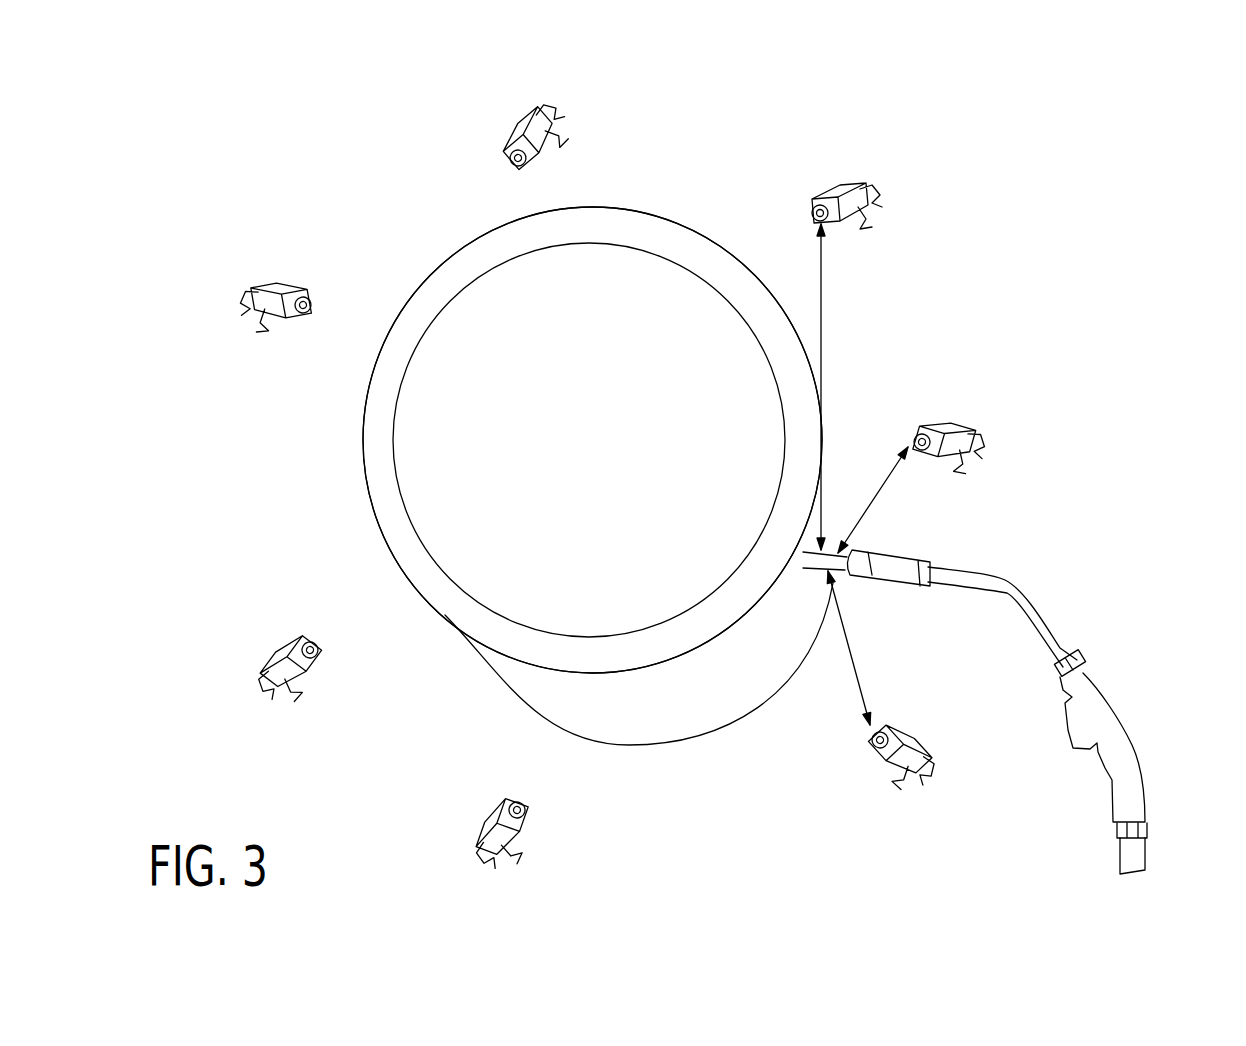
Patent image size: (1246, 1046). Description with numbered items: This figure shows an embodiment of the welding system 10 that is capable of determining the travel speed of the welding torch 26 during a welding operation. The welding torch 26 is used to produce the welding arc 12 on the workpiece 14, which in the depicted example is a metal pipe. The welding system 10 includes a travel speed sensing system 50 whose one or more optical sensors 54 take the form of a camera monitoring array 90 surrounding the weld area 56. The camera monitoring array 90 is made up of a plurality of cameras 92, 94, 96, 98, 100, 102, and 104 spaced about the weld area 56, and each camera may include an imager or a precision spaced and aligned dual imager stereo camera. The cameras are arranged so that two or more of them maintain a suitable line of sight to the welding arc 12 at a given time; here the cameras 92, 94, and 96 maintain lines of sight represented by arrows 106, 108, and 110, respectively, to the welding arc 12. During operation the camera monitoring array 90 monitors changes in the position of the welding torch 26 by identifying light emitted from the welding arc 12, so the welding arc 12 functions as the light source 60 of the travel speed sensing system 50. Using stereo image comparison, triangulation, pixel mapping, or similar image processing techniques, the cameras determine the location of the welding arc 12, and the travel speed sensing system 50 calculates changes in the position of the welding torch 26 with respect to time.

The welding system 10 is at (320, 94).
The welding arc 12 is at (805, 557).
The workpiece 14 is at (708, 715).
The welding torch 26 is at (1140, 753).
The travel speed sensing system 50 is at (747, 116).
The optical sensors 54 is at (188, 247).
The weld area 56 is at (933, 305).
The light source 60 is at (804, 557).
The camera monitoring array 90 is at (188, 247).
The camera 92 is at (828, 185).
The camera 94 is at (948, 425).
The camera 96 is at (905, 737).
The camera 98 is at (500, 825).
The camera 100 is at (288, 648).
The camera 102 is at (282, 290).
The camera 104 is at (512, 136).
The arrow 106 is at (822, 385).
The arrow 108 is at (875, 495).
The arrow 110 is at (850, 652).